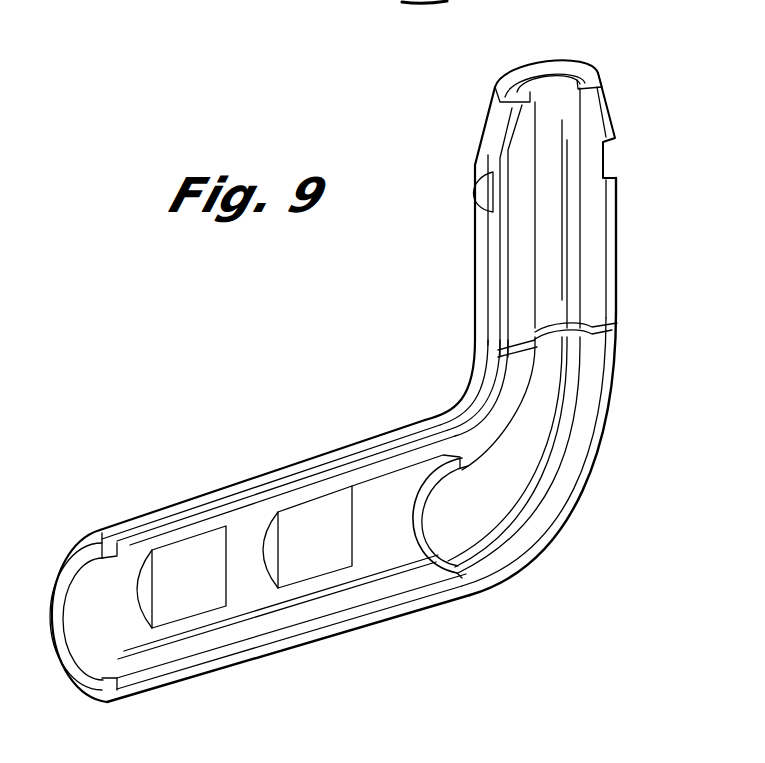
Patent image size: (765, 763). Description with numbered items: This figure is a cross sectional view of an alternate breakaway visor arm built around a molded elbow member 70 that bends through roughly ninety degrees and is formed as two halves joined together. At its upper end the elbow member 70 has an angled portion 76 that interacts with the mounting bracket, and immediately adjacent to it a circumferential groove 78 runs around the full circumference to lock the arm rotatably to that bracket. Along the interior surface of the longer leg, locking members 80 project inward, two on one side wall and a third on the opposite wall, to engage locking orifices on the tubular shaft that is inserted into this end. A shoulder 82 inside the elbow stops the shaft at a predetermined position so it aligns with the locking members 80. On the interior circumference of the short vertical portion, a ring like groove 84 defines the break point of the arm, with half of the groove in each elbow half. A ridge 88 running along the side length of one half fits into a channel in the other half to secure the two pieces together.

The elbow member 70 is at (452, 392).
The angled portion 76 is at (610, 108).
The circumferential groove 78 is at (617, 160).
The locking members 80 is at (207, 563).
The shoulder 82 is at (436, 565).
The ring like groove 84 is at (603, 330).
The ridge 88 is at (520, 282).